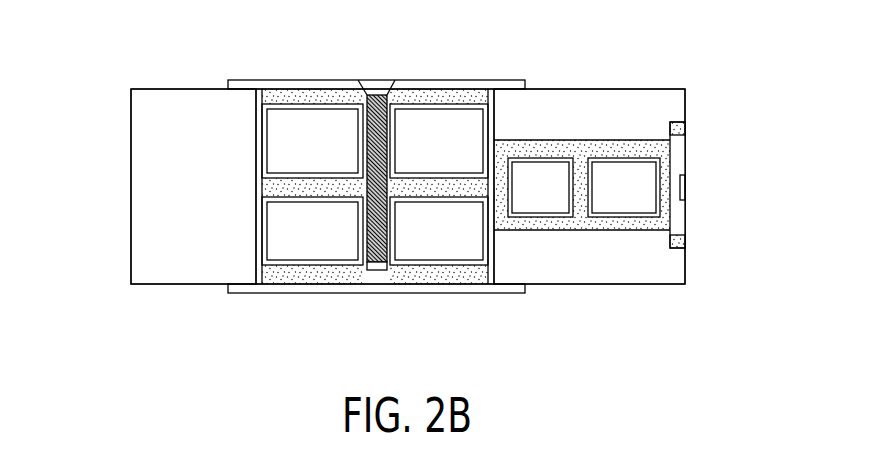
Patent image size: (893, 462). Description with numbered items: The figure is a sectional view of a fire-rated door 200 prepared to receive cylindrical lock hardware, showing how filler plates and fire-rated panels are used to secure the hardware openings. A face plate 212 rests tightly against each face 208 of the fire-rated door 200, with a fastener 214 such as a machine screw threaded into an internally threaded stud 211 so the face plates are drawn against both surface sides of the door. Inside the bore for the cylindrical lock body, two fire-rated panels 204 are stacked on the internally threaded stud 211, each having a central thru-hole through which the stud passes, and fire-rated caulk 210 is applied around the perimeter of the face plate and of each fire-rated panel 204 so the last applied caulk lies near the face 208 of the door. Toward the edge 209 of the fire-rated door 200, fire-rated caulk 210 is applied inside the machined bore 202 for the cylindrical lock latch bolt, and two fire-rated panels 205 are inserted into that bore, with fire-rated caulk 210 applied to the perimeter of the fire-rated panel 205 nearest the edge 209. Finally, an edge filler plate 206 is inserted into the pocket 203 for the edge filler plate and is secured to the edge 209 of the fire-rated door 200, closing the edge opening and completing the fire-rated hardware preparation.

The fire-rated door 200 is at (112, 177).
The machined bore for a cylindrical lock latch bolt 202 is at (662, 150).
The pocket for the edge filler plate 203 is at (688, 250).
The fire-rated panel 204 is at (430, 138).
The fire-rated panel 205 is at (547, 173).
The edge filler plate 206 is at (702, 225).
The face 208 is at (181, 80).
The edge 209 is at (687, 103).
The fire-rated caulk 210 is at (320, 97).
The internally threaded stud 211 is at (362, 272).
The face plate 212 is at (264, 80).
The fastener 214 is at (378, 78).